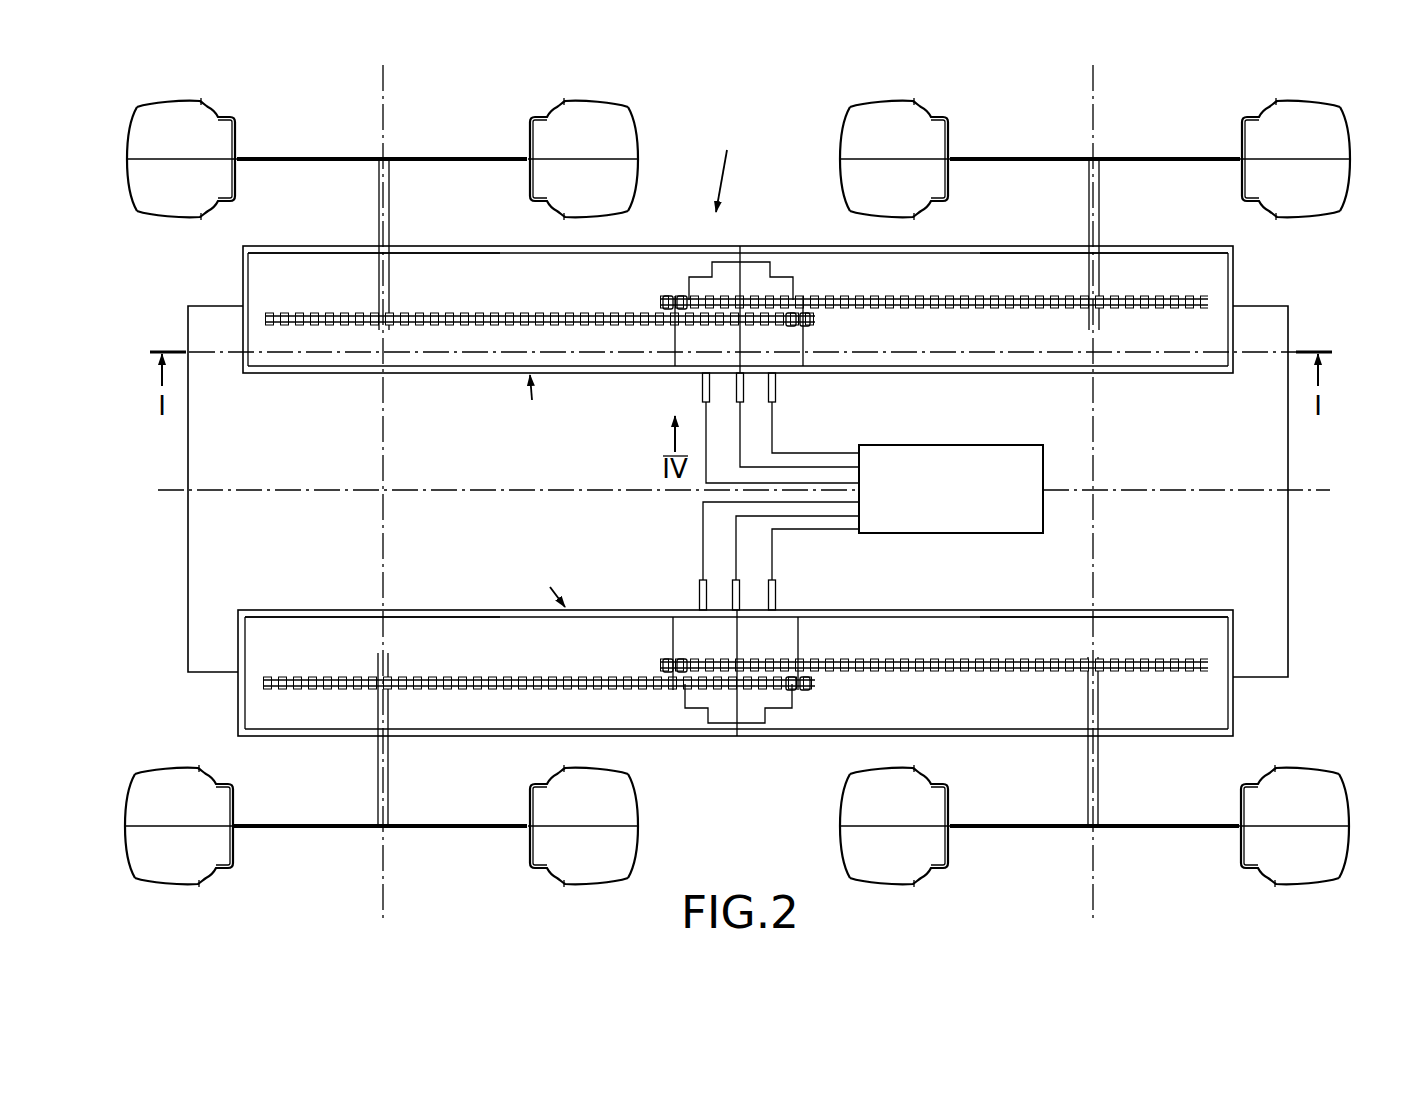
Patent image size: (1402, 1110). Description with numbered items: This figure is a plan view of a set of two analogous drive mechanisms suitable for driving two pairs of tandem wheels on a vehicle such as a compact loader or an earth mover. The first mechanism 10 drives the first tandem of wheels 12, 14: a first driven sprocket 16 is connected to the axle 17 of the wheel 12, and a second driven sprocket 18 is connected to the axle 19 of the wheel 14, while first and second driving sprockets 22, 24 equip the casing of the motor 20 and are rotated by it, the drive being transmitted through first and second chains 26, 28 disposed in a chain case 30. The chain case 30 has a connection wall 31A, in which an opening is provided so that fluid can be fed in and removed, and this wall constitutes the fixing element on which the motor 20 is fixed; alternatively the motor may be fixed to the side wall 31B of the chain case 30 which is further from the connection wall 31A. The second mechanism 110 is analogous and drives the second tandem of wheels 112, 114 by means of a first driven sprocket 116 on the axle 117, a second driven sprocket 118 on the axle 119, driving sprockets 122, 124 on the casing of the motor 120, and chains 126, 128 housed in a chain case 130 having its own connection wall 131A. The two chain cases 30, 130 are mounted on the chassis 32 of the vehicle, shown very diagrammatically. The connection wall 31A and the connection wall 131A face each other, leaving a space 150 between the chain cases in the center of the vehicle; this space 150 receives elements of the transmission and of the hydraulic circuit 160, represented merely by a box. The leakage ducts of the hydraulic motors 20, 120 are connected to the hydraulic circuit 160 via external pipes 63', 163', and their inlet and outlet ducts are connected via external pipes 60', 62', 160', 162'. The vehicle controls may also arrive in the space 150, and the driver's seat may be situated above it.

The first mechanism 10 is at (1290, 275).
The first wheel 12 is at (625, 118).
The second wheel 14 is at (1340, 120).
The first driven sprocket 16 is at (335, 282).
The axle 17 is at (393, 206).
The second driven sprocket 18 is at (1150, 283).
The axle 19 is at (1100, 206).
The motor 20 is at (755, 270).
The first driving sprocket 22 is at (828, 328).
The second driving sprocket 24 is at (657, 283).
The first chain 26 is at (497, 312).
The second chain 28 is at (1007, 296).
The chain case 30 is at (802, 245).
The connection wall 31A is at (559, 396).
The side wall 31B is at (738, 165).
The chassis 32 is at (1289, 583).
The external pipe 60' is at (814, 413).
The external pipe 62' is at (725, 428).
The external pipe 63' is at (798, 420).
The second mechanism 110 is at (1253, 644).
The wheel 112 is at (635, 847).
The wheel 114 is at (1340, 787).
The first driven sprocket 116 is at (333, 655).
The axle 117 is at (393, 777).
The second driven sprocket 118 is at (1132, 648).
The axle 119 is at (1100, 777).
The motor 120 is at (798, 645).
The first driving sprocket 122 is at (822, 700).
The second driving sprocket 124 is at (637, 648).
The first chain 126 is at (450, 677).
The second chain 128 is at (980, 660).
The chain case 130 is at (688, 737).
The connection wall 131A is at (528, 586).
The space 150 is at (283, 465).
The hydraulic circuit 160 is at (988, 489).
The external pipe 160' is at (814, 569).
The external pipe 162' is at (748, 556).
The external pipe 163' is at (748, 563).